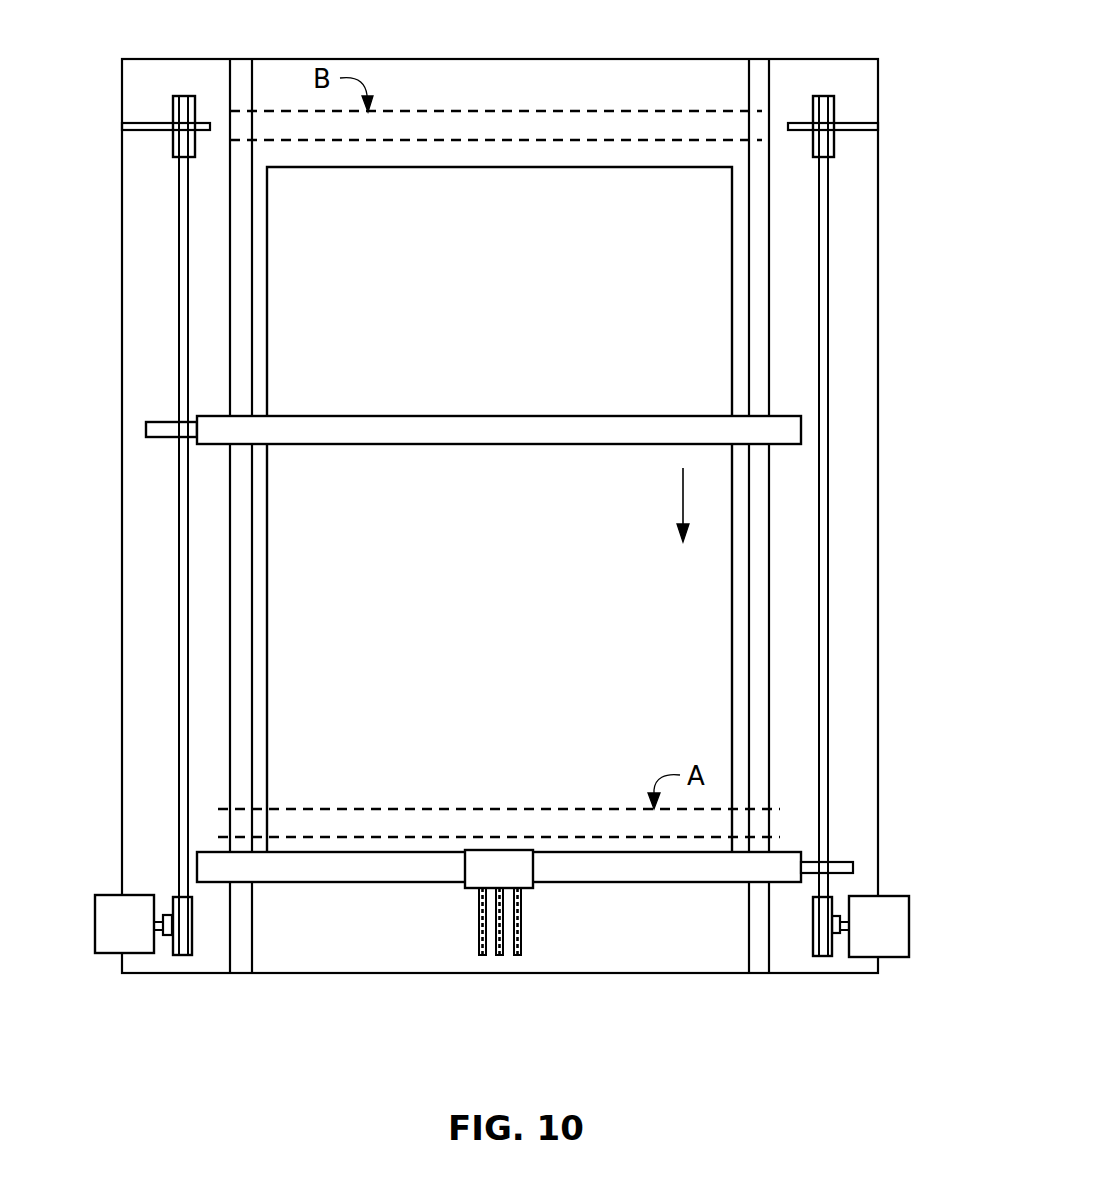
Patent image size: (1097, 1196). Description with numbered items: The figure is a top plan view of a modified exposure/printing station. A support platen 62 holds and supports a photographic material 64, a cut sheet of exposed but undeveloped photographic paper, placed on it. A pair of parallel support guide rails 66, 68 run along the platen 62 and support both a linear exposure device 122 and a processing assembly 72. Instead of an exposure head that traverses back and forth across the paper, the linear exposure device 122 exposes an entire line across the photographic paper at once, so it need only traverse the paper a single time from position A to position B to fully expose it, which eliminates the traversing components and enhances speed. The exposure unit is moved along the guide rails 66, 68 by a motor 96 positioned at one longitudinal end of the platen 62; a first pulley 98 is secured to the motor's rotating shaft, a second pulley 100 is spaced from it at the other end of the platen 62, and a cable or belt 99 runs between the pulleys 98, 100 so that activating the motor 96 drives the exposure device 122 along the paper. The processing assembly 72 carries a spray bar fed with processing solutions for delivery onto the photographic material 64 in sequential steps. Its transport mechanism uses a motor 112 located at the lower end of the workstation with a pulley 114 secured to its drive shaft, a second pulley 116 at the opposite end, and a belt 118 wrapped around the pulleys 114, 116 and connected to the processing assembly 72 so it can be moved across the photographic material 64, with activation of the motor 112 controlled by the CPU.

The support platen 62 is at (493, 80).
The photographic material 64 is at (542, 267).
The support guide rail 66 is at (240, 665).
The support guide rail 68 is at (755, 750).
The processing assembly 72 is at (403, 851).
The motor 96 is at (102, 955).
The first pulley 98 is at (192, 943).
The cable or belt 99 is at (181, 335).
The second pulley 100 is at (173, 117).
The motor 112 is at (912, 910).
The pulley 114 is at (810, 933).
The second pulley 116 is at (835, 140).
The belt 118 is at (825, 275).
The linear exposure device 122 is at (497, 452).